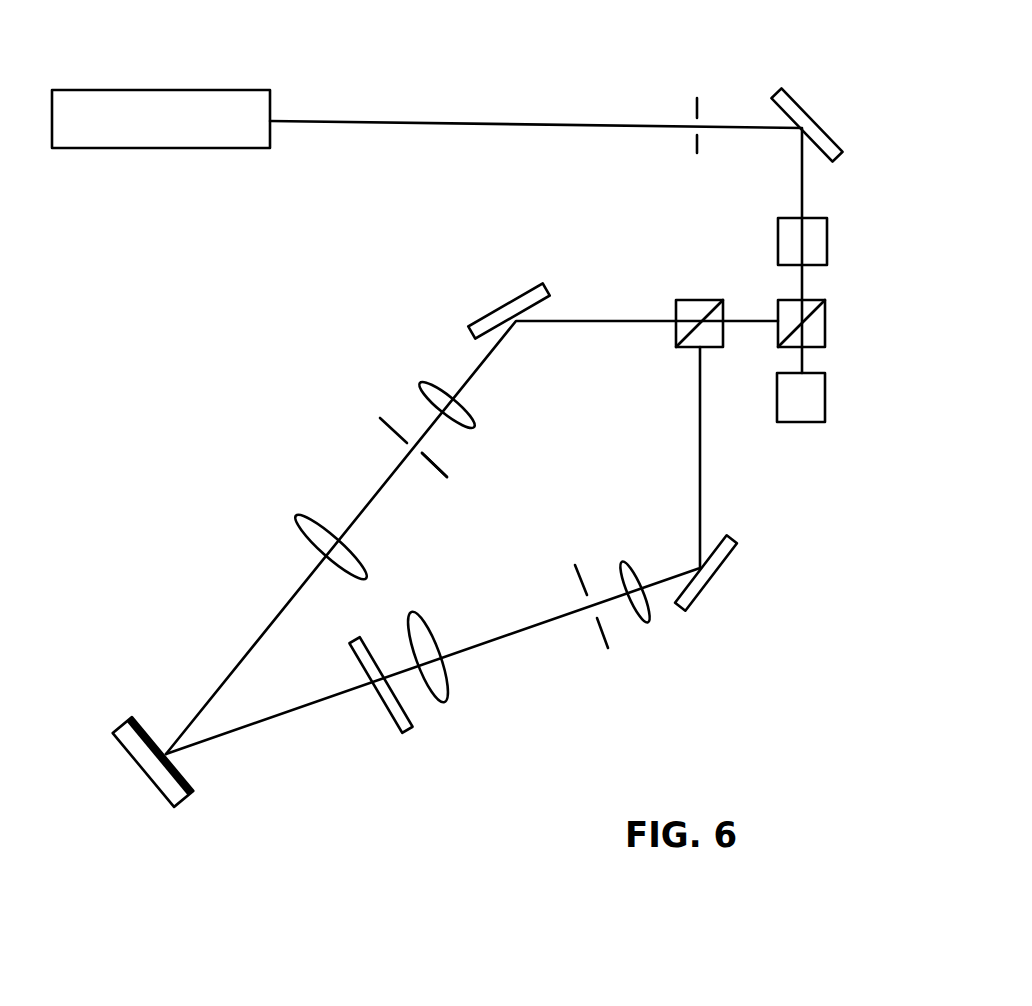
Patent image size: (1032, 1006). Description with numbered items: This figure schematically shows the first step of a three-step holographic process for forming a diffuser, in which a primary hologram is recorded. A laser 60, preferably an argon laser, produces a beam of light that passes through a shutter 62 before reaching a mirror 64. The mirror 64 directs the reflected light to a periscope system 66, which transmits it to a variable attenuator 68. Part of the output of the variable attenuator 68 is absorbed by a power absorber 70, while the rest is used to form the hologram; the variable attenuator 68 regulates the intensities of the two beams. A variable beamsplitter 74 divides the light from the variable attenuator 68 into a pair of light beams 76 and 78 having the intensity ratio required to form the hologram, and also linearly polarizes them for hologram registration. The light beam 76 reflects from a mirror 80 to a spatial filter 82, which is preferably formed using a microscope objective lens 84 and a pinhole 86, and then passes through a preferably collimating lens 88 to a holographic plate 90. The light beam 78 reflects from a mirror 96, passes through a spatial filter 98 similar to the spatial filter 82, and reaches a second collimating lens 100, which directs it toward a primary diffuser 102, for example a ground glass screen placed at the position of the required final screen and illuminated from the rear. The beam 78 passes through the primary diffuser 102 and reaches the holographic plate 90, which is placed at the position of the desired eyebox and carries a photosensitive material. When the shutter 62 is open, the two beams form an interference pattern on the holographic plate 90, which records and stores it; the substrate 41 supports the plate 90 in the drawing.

The substrate 41 is at (136, 762).
The laser 60 is at (150, 149).
The shutter 62 is at (677, 96).
The mirror 64 is at (818, 127).
The periscope system 66 is at (827, 235).
The variable attenuator 68 is at (826, 324).
The power absorber 70 is at (825, 390).
The variable beamsplitter 74 is at (690, 299).
The light beam 76 is at (607, 324).
The light beam 78 is at (698, 419).
The mirror 80 is at (516, 294).
The spatial filter 82 is at (372, 381).
The microscope objective lens 84 is at (470, 417).
The pinhole 86 is at (438, 471).
The collimating lens 88 is at (303, 541).
The holographic plate 90 is at (179, 767).
The mirror 96 is at (710, 585).
The spatial filter 98 is at (650, 661).
The second collimating lens 100 is at (450, 678).
The primary diffuser 102 is at (401, 727).